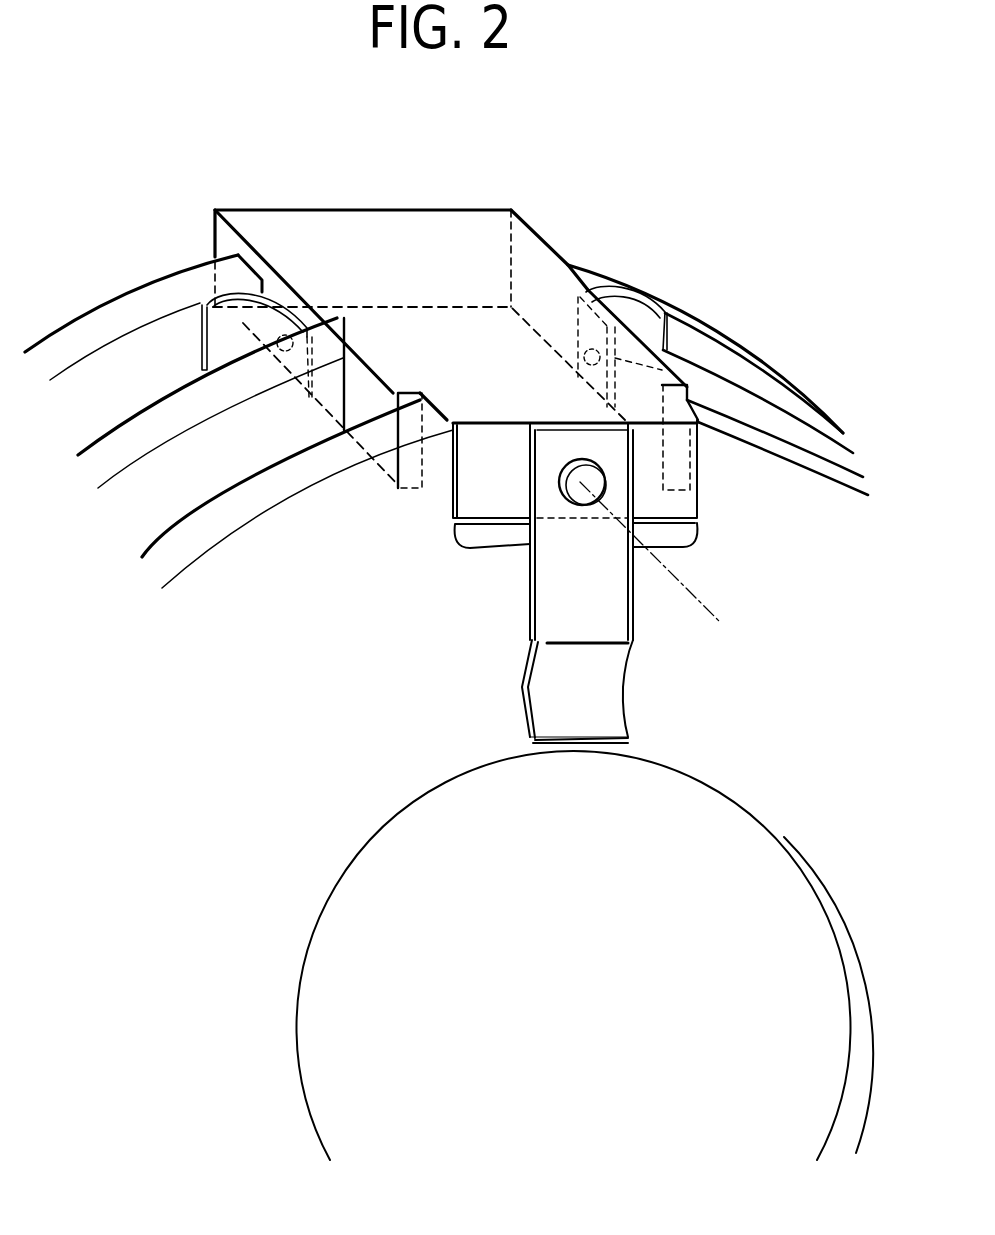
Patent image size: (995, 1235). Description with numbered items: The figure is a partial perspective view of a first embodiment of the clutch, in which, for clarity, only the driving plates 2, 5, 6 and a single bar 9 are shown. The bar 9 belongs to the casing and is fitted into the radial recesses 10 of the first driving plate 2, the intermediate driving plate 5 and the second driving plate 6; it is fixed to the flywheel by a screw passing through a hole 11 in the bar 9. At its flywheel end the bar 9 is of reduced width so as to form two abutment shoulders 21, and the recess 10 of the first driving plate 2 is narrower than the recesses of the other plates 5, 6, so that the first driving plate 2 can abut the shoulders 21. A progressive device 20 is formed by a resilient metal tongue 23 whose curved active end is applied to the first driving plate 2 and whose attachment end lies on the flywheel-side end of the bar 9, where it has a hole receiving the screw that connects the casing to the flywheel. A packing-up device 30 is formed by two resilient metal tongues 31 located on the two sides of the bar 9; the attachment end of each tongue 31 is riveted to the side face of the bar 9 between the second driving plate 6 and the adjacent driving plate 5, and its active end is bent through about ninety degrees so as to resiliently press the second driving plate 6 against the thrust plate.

The first driving plate 2 is at (233, 505).
The driving plate 5 is at (165, 415).
The second driving plate 6 is at (115, 312).
The bar 9 is at (400, 237).
The radial recess 10 is at (480, 537).
The hole 11 is at (580, 503).
The progressive device 20 is at (567, 581).
The abutment shoulder 21 is at (408, 397).
The resilient metal tongue 23 is at (602, 690).
The packing-up device 30 is at (226, 324).
The resilient metal tongue 31 is at (275, 296).